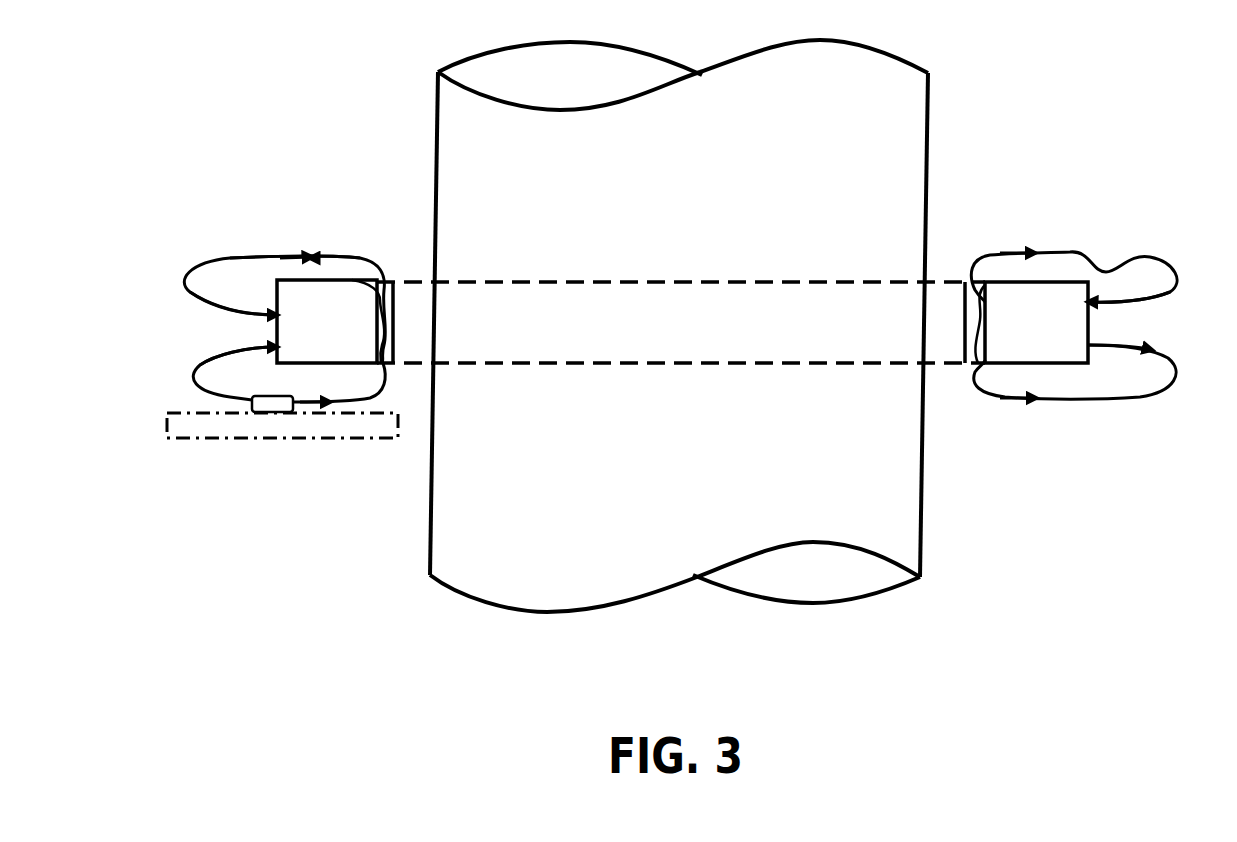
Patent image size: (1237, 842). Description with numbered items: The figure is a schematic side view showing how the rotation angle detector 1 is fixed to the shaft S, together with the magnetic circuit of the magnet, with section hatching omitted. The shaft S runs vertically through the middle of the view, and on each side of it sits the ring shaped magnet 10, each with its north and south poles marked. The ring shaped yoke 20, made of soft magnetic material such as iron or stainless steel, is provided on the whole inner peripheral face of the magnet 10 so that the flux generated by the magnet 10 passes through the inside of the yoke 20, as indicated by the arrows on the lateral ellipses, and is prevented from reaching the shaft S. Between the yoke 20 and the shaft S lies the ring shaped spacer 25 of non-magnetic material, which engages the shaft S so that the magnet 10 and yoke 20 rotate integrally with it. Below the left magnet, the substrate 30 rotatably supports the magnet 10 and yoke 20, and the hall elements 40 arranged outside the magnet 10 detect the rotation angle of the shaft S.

The rotation angle detector 1 is at (1088, 197).
The shaft S is at (903, 162).
The ring shaped magnet 10 is at (317, 280).
The ring shaped yoke 20 is at (352, 280).
The ring shaped spacer 25 is at (415, 293).
The substrate 30 is at (207, 412).
The hall elements 40 is at (265, 412).